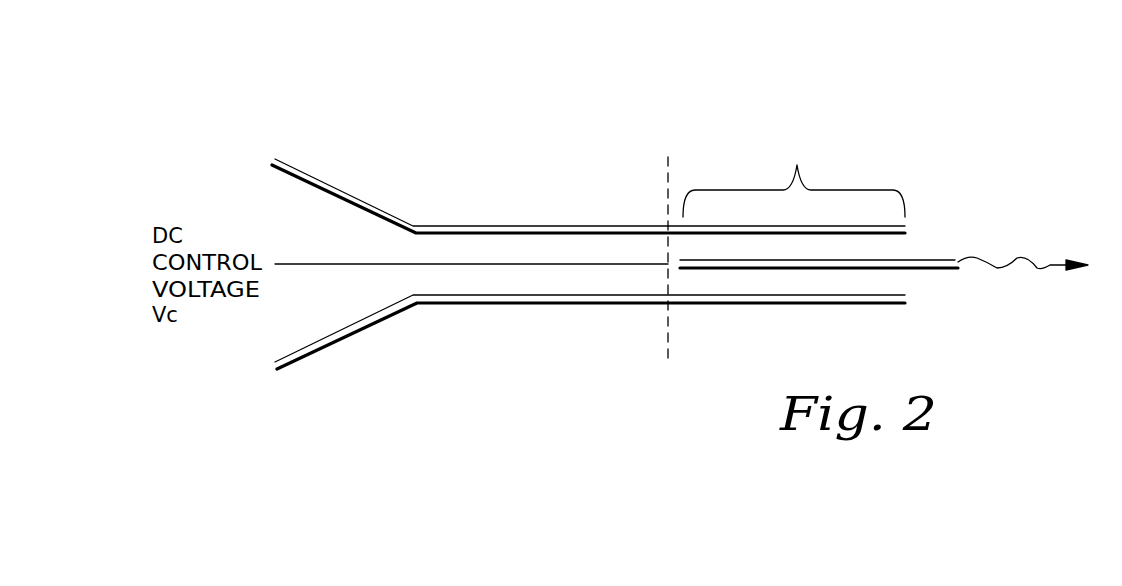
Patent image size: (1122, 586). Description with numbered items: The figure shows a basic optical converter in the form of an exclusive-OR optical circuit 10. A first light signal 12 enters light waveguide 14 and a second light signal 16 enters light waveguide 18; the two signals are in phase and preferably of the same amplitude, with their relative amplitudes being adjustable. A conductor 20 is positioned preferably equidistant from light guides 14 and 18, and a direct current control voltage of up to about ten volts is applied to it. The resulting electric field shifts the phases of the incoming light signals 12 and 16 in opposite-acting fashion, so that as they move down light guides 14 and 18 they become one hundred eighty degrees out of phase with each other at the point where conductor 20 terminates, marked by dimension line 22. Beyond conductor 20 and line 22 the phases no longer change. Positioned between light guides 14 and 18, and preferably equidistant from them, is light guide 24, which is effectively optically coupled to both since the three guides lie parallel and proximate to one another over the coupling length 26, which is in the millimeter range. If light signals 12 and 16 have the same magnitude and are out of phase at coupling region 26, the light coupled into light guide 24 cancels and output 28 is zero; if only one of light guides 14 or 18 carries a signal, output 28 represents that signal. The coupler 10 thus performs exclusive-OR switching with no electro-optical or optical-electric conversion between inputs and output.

The exclusive-OR optical circuit 10 is at (489, 97).
The light signal 12 is at (247, 162).
The light waveguide 14 is at (411, 222).
The light signal 16 is at (247, 371).
The light waveguide 18 is at (420, 304).
The conductor 20 is at (293, 264).
The dimension line 22 is at (667, 165).
The light guide 24 is at (932, 261).
The coupling length 26 is at (797, 152).
The output 28 is at (1040, 270).